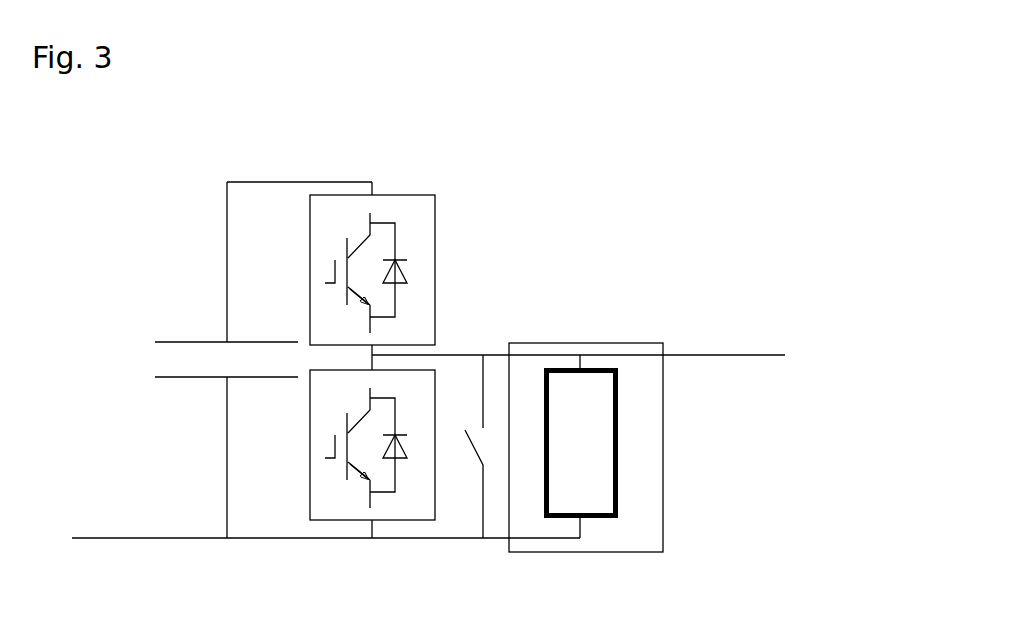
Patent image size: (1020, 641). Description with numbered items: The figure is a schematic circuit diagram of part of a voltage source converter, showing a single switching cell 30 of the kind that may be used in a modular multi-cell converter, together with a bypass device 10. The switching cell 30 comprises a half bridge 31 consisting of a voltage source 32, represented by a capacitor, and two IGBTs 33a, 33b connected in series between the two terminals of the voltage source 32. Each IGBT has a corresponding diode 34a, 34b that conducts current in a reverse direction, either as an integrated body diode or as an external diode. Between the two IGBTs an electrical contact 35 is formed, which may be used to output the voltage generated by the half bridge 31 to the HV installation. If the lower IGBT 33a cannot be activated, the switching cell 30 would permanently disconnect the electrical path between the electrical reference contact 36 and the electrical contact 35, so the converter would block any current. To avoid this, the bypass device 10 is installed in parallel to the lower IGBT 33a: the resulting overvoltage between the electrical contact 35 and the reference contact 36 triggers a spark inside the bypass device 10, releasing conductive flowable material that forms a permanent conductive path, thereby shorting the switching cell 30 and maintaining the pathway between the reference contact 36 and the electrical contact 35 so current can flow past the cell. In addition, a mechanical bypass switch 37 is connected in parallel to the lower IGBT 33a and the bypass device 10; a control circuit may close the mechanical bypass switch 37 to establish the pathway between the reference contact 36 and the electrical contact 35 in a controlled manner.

The switching cell 30 is at (682, 107).
The half bridge 31 is at (302, 157).
The voltage source 32 is at (127, 357).
The lower IGBT 33a is at (342, 422).
The upper IGBT 33b is at (345, 245).
The diode 34a is at (400, 458).
The diode 34b is at (415, 255).
The electrical contact 35 is at (697, 355).
The electrical reference contact 36 is at (128, 538).
The mechanical bypass switch 37 is at (483, 327).
The bypass device 10 is at (663, 473).